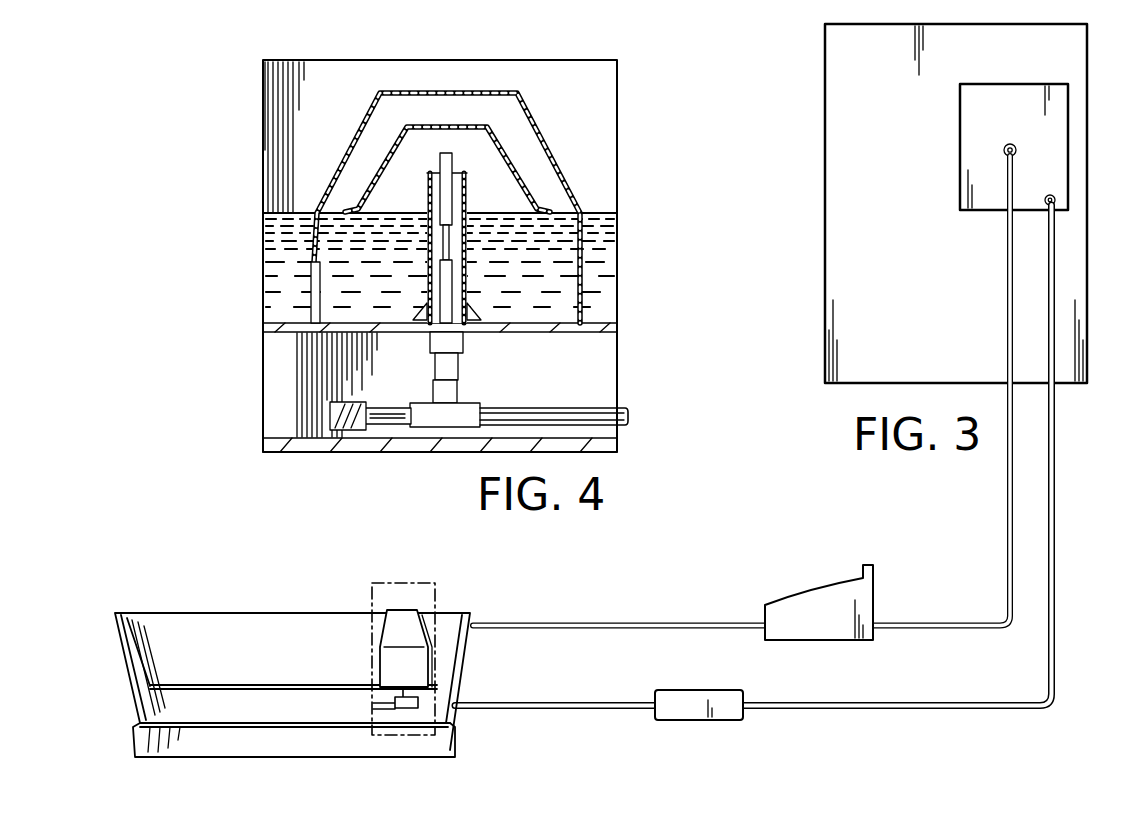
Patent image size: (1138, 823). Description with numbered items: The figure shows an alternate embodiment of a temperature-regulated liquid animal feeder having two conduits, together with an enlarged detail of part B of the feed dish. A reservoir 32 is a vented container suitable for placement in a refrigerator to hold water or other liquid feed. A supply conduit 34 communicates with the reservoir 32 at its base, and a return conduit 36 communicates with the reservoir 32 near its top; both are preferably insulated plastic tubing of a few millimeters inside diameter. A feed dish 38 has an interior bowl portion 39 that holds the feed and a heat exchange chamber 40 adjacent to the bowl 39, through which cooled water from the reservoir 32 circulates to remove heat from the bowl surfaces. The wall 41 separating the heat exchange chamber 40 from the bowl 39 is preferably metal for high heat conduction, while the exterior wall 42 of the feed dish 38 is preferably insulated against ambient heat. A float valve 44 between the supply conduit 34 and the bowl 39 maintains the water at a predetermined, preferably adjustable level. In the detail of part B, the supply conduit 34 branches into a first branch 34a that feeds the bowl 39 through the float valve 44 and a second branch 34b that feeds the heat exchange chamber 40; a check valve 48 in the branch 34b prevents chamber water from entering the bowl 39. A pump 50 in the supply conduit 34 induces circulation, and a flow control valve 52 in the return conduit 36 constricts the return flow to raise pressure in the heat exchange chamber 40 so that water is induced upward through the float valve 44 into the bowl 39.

In FIG. 3, the reservoir 32 is at (1058, 172).
In FIG. 4, the supply conduit 34 is at (613, 410).
In FIG. 3, the supply conduit 34 is at (1055, 529).
In FIG. 4, the first branch 34a is at (462, 362).
In FIG. 4, the second branch 34b is at (410, 430).
In FIG. 3, the return conduit 36 is at (1007, 537).
In FIG. 3, the feed dish 38 is at (259, 683).
In FIG. 3, the interior bowl portion 39 is at (245, 628).
In FIG. 3, the heat exchange chamber 40 is at (283, 717).
In FIG. 3, the wall 41 is at (305, 687).
In FIG. 3, the exterior wall 42 is at (180, 732).
In FIG. 4, the float valve 44 is at (518, 178).
In FIG. 4, the check valve 48 is at (353, 430).
In FIG. 3, the pump 50 is at (697, 713).
In FIG. 3, the flow control valve 52 is at (802, 607).
In FIG. 3, the part B is at (437, 582).